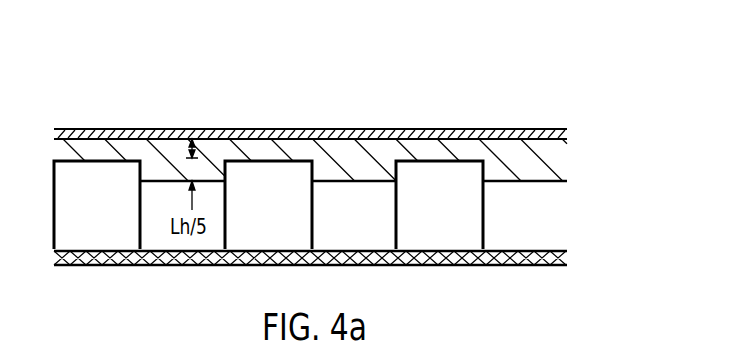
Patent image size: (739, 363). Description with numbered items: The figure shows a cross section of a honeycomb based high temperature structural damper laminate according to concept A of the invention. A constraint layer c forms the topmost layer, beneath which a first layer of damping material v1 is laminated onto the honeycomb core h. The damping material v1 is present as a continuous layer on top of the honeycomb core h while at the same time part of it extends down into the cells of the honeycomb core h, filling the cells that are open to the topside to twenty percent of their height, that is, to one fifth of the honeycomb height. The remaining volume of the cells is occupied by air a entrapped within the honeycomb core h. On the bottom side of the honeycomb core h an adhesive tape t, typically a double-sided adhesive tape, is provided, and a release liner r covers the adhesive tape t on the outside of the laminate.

The constraint layer c is at (567, 136).
The first layer of damping material v1 is at (555, 160).
The honeycomb core h is at (487, 193).
The air entrapped within the honeycomb core a is at (468, 209).
The adhesive tape t is at (552, 262).
The release liner r is at (543, 265).